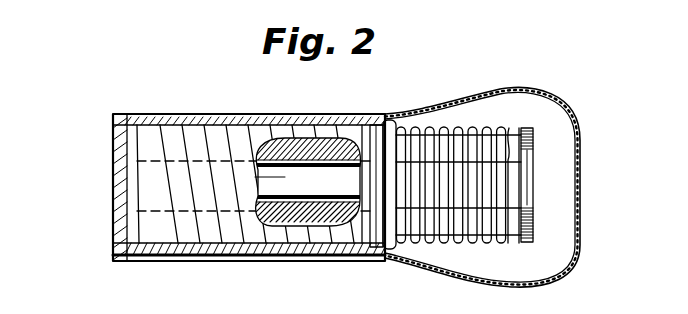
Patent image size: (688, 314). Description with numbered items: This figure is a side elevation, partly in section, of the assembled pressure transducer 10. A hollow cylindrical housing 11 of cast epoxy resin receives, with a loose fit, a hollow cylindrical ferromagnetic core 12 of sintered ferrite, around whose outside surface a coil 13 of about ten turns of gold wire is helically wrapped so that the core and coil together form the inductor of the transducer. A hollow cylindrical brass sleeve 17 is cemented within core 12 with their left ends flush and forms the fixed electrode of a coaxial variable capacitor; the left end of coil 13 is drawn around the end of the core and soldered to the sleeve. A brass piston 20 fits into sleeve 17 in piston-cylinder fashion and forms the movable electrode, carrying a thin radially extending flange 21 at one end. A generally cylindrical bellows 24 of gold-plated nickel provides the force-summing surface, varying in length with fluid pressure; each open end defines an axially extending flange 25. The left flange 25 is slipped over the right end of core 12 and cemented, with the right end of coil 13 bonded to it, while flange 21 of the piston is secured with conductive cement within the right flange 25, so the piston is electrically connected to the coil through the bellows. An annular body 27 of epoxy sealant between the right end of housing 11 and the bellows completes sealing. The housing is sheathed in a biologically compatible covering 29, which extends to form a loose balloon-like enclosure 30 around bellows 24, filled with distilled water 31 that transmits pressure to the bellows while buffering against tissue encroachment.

The pressure transducer 10 is at (79, 143).
The housing 11 is at (202, 114).
The ferromagnetic core 12 is at (330, 237).
The coil 13 is at (174, 114).
The sleeve 17 is at (277, 188).
The piston 20 is at (307, 184).
The flange 21 is at (533, 183).
The bellows 24 is at (470, 244).
The flange 25 is at (352, 114).
The annular body 27 is at (392, 116).
The covering 29 is at (233, 114).
The enclosure 30 is at (434, 106).
The distilled water 31 is at (517, 122).